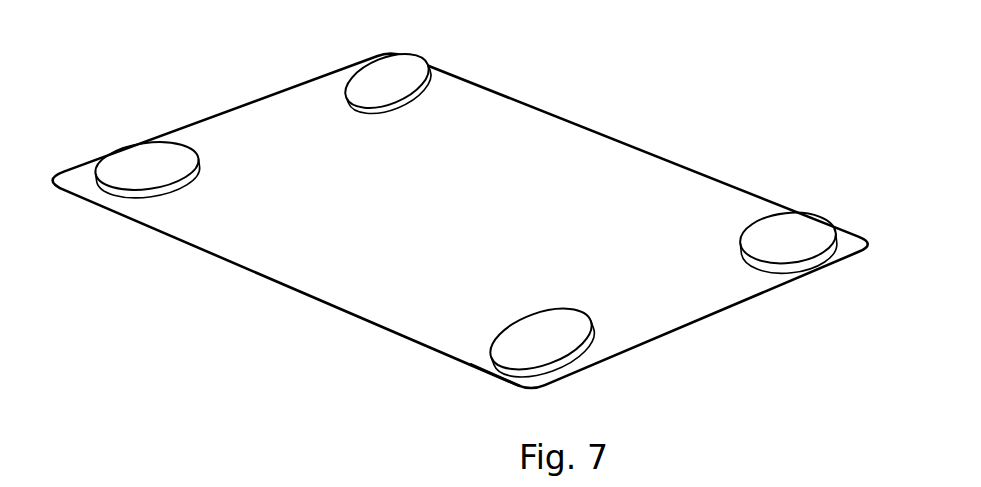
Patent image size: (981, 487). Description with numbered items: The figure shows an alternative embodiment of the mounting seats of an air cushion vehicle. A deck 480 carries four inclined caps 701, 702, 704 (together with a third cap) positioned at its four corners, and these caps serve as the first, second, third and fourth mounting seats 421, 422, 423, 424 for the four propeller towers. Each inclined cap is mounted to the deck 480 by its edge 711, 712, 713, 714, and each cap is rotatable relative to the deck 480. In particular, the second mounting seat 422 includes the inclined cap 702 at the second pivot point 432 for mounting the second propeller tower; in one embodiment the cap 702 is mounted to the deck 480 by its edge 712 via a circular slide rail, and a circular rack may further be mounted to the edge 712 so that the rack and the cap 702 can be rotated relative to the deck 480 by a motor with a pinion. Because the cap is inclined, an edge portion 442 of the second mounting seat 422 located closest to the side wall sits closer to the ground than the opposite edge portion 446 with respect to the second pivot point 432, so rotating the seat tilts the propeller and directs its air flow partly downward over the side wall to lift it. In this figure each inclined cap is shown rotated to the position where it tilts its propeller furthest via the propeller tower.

The deck 480 is at (345, 230).
The edge portion 442 is at (498, 381).
The inclined cap 701 is at (807, 255).
The inclined cap 702 is at (410, 109).
The inclined cap 704 is at (174, 171).
The first mounting seat 421 is at (807, 255).
The second mounting seat 422 is at (564, 344).
The third mounting seat 423 is at (410, 109).
The fourth mounting seat 424 is at (174, 171).
The edge 711 is at (794, 303).
The edge 712 is at (647, 380).
The edge 713 is at (422, 155).
The edge 714 is at (215, 228).
The second pivot point 432 is at (549, 302).
The opposite edge portion 446 is at (620, 302).